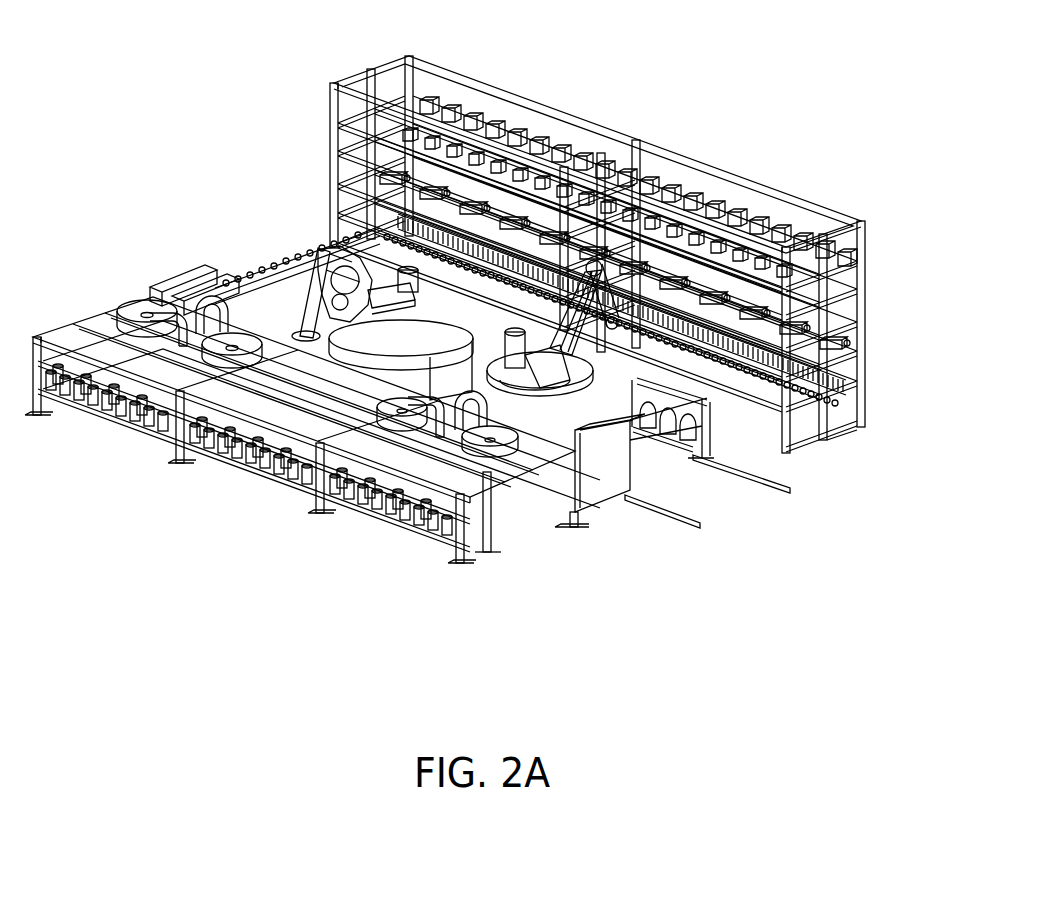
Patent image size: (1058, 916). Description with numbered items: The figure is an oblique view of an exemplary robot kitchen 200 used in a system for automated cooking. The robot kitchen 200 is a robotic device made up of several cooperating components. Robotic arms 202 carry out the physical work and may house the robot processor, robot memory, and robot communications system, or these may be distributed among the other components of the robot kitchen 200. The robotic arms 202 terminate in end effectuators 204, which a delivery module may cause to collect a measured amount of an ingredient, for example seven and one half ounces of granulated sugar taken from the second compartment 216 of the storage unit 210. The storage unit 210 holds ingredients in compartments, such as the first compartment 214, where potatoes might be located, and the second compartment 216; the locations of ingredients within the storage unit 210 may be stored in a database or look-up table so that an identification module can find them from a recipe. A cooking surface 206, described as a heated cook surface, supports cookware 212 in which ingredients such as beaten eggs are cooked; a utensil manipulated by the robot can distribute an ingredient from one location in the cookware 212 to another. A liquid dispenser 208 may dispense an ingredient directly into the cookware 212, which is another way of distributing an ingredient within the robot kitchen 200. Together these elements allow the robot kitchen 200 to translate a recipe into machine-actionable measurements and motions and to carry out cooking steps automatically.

The robot kitchen 200 is at (215, 42).
The robotic arms 202 is at (340, 235).
The end effectuators 204 is at (305, 360).
The cooking surface 206 is at (605, 525).
The liquid dispenser 208 is at (423, 423).
The storage unit 210 is at (870, 197).
The cookware 212 is at (213, 343).
The first compartment 214 is at (333, 165).
The second compartment 216 is at (425, 97).